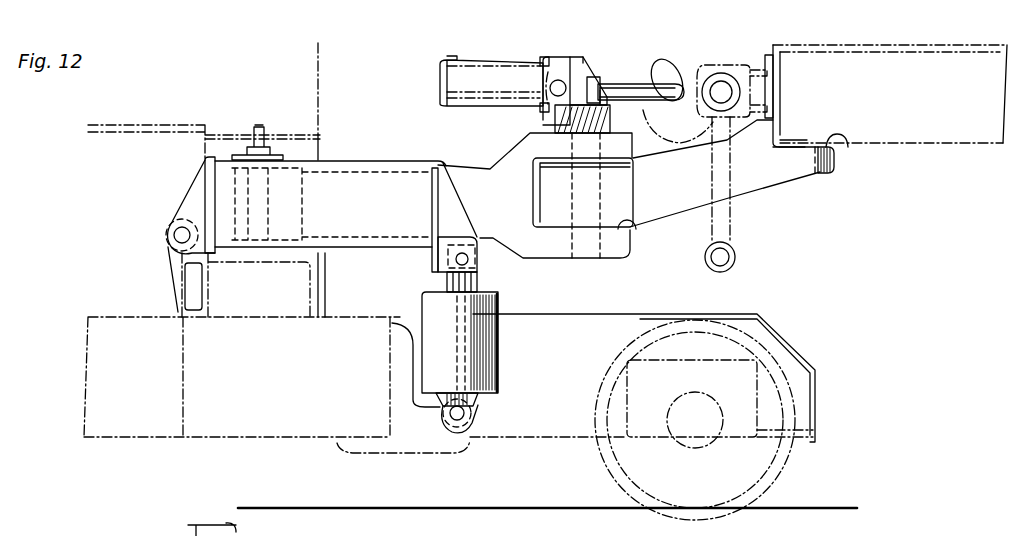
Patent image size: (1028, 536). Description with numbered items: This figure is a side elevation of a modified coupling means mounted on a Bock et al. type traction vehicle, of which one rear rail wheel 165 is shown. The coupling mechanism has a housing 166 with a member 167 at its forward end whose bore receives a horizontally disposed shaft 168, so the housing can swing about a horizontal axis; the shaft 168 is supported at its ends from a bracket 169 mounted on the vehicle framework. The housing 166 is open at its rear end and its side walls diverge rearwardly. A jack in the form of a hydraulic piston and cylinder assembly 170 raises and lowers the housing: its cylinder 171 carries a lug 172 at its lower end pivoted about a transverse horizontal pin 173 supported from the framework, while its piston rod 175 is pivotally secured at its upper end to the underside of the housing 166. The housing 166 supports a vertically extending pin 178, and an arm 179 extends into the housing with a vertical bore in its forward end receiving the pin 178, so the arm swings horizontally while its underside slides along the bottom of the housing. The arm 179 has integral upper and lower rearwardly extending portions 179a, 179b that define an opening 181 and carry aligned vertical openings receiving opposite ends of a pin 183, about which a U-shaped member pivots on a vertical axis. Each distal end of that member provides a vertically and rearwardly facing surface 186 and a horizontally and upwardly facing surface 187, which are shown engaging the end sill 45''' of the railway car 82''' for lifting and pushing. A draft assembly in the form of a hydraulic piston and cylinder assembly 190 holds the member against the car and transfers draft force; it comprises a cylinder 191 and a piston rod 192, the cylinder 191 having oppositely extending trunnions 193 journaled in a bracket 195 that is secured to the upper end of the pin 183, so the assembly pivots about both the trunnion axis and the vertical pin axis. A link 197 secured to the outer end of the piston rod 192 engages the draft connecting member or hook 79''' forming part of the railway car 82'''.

The rail wheel 165 is at (618, 465).
The housing 166 is at (363, 158).
The member 167 is at (181, 194).
The shaft 168 is at (176, 233).
The bracket 169 is at (177, 308).
The hydraulic piston and cylinder assembly 170 is at (511, 306).
The cylinder 171 is at (422, 313).
The lug 172 is at (478, 400).
The pin 173 is at (467, 417).
The piston rod 175 is at (485, 279).
The pin 178 is at (258, 125).
The arm 179 is at (468, 167).
The upper rearwardly extending portion 179a is at (533, 145).
The lower rearwardly extending portion 179b is at (630, 256).
The opening 181 is at (634, 225).
The pin 183 is at (600, 185).
The vertically and rearwardly facing surface 186 is at (765, 128).
The horizontally and upwardly facing surface 187 is at (830, 145).
The hydraulic piston and cylinder assembly 190 is at (531, 50).
The cylinder 191 is at (463, 60).
The piston rod 192 is at (593, 64).
The trunnions 193 is at (550, 58).
The bracket 195 is at (597, 118).
The link 197 is at (620, 79).
The draft connecting member or hook 79''' is at (676, 87).
The railway car 82''' is at (860, 86).
The end sill 45''' is at (830, 126).